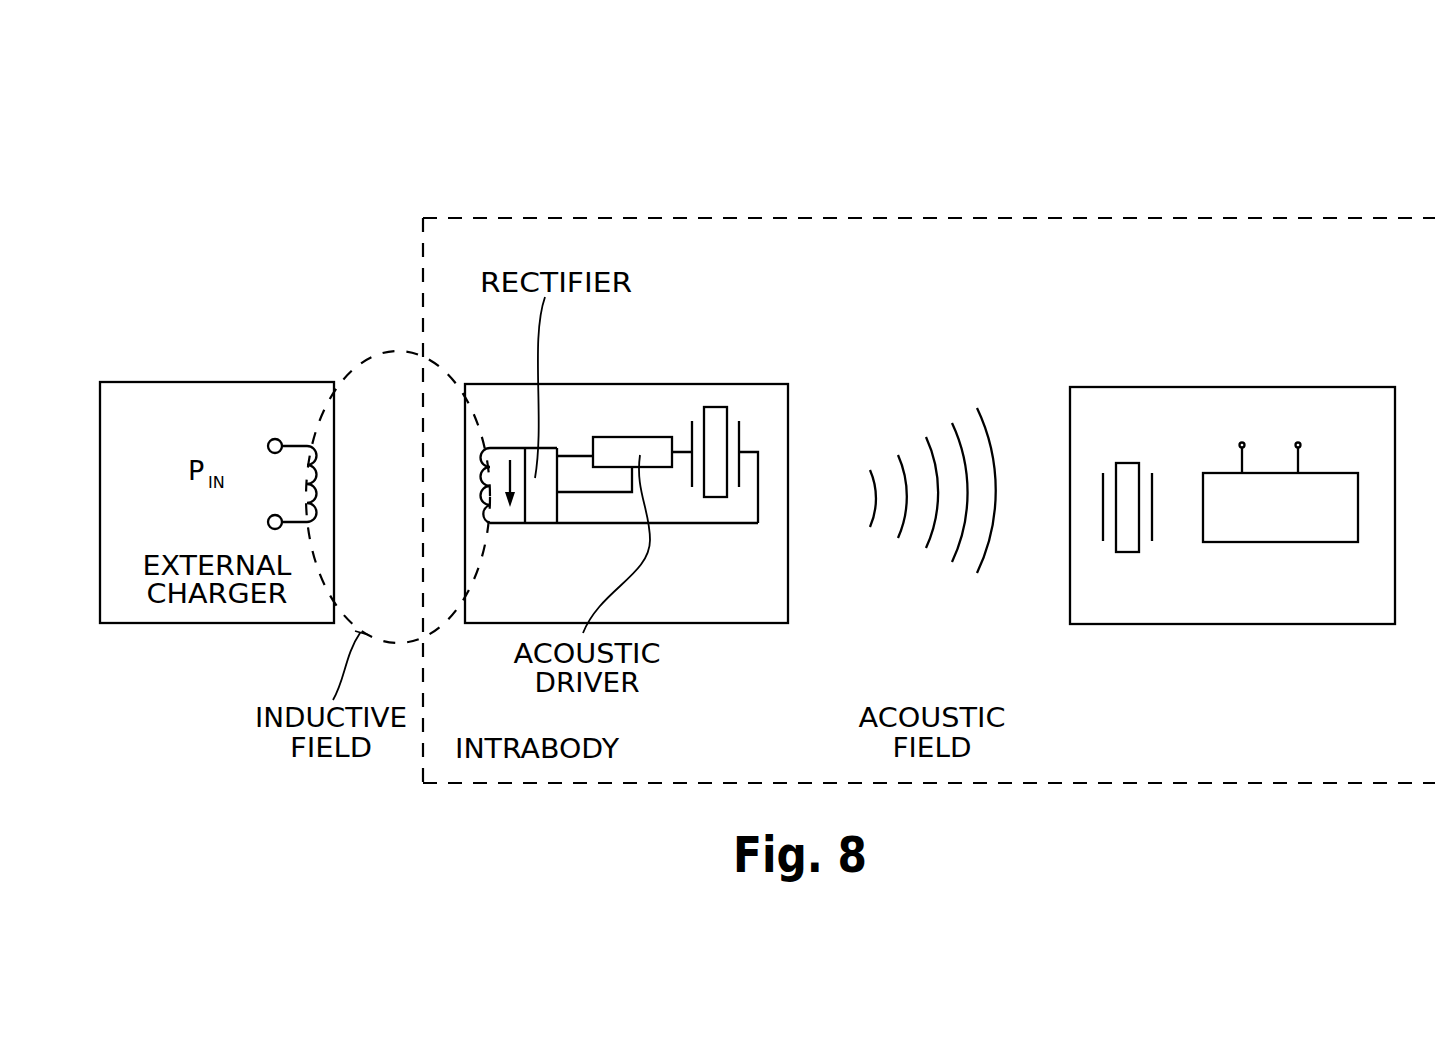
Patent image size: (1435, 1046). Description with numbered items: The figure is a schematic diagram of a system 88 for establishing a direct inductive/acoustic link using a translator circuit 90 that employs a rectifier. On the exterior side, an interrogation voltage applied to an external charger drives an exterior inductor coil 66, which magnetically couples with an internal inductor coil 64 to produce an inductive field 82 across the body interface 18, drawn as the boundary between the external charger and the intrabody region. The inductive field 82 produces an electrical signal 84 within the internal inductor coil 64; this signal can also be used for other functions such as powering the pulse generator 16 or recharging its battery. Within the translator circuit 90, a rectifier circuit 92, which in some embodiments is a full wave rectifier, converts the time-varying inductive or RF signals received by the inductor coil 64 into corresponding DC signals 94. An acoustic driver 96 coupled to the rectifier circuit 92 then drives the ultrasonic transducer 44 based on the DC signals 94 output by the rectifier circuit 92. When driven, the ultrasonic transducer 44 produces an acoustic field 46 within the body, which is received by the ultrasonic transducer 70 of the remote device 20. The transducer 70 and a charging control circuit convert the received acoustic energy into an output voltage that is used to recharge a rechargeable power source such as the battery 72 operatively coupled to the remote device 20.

The system 88 is at (806, 128).
The body interface 18 is at (845, 220).
The exterior inductor coil 66 is at (300, 443).
The inductive field 82 is at (394, 357).
The pulse generator 16 is at (627, 384).
The internal inductor coil 64 is at (518, 447).
The translator circuit 90 is at (695, 596).
The electrical signal 84 is at (523, 463).
The rectifier circuit 92 is at (547, 458).
The DC signals 94 is at (587, 494).
The acoustic driver 96 is at (640, 437).
The ultrasonic transducer 44 is at (716, 407).
The acoustic field 46 is at (928, 547).
The remote device 20 is at (1273, 386).
The ultrasonic transducer 70 is at (1123, 462).
The battery 72 is at (1273, 543).